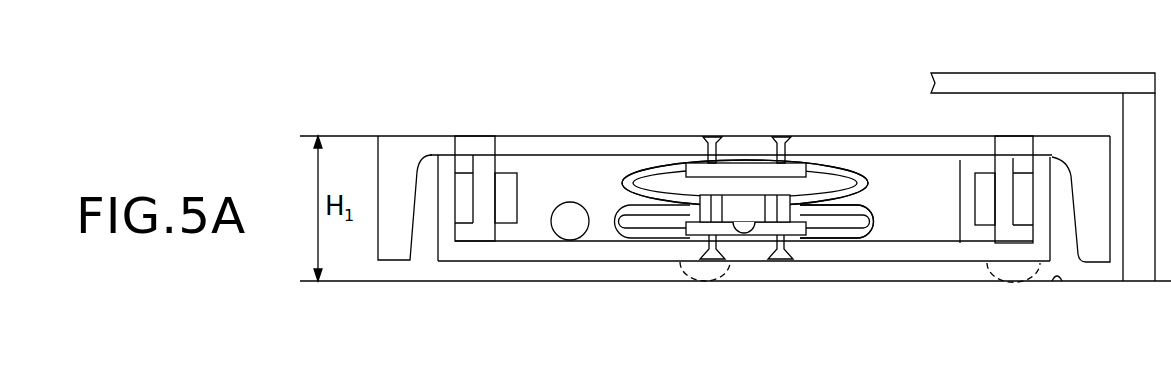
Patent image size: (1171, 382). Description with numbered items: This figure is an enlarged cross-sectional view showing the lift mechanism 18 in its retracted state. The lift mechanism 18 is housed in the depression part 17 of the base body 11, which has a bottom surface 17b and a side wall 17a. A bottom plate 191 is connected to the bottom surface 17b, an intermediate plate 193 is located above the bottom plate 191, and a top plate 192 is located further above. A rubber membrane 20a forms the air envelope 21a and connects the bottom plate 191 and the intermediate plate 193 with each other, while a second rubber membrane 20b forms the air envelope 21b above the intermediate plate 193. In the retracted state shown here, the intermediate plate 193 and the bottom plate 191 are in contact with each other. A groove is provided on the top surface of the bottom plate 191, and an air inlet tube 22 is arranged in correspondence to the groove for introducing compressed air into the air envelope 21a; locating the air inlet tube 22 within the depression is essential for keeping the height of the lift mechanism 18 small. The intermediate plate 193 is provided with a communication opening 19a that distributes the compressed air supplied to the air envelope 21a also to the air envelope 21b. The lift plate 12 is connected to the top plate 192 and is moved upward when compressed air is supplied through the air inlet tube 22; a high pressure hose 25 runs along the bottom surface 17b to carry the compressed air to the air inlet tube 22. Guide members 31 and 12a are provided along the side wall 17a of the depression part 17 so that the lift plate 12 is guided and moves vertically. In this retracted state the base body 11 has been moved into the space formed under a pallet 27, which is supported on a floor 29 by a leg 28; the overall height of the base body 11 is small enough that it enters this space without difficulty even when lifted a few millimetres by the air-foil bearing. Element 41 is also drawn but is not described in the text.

The base body 11 is at (393, 152).
The lift plate 12 is at (533, 148).
The depression part 17 is at (583, 173).
The side wall 17a is at (1045, 203).
The bottom surface 17b is at (613, 252).
The guide member 12a is at (503, 233).
The guide member 31 is at (482, 198).
The high pressure hose 25 is at (568, 228).
The rubber membrane 20a is at (873, 221).
The rubber membrane 20b is at (868, 178).
The air envelope 21a is at (847, 222).
The air envelope 21b is at (833, 182).
The communication opening 19a is at (757, 187).
The bottom plate 191 is at (762, 236).
The top plate 192 is at (735, 163).
The intermediate plate 193 is at (707, 203).
The air inlet tube 22 is at (743, 233).
The lift mechanism 18 is at (690, 248).
The right ball 41 is at (1017, 233).
The pallet 27 is at (1025, 85).
The leg 28 is at (1137, 272).
The floor 29 is at (1060, 281).